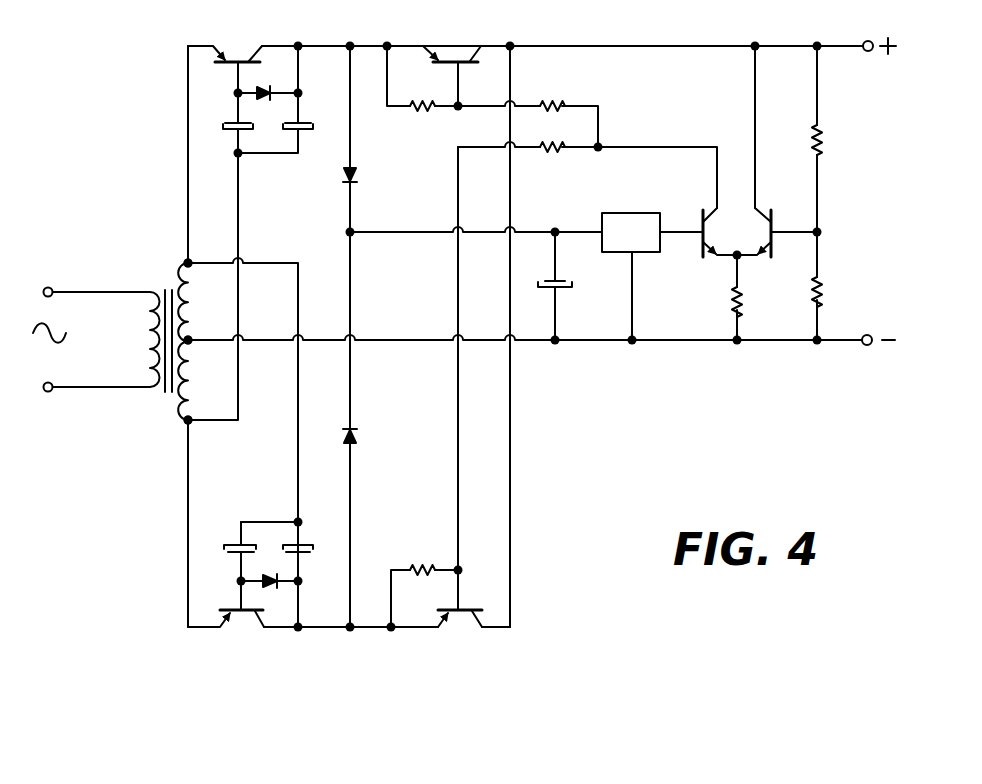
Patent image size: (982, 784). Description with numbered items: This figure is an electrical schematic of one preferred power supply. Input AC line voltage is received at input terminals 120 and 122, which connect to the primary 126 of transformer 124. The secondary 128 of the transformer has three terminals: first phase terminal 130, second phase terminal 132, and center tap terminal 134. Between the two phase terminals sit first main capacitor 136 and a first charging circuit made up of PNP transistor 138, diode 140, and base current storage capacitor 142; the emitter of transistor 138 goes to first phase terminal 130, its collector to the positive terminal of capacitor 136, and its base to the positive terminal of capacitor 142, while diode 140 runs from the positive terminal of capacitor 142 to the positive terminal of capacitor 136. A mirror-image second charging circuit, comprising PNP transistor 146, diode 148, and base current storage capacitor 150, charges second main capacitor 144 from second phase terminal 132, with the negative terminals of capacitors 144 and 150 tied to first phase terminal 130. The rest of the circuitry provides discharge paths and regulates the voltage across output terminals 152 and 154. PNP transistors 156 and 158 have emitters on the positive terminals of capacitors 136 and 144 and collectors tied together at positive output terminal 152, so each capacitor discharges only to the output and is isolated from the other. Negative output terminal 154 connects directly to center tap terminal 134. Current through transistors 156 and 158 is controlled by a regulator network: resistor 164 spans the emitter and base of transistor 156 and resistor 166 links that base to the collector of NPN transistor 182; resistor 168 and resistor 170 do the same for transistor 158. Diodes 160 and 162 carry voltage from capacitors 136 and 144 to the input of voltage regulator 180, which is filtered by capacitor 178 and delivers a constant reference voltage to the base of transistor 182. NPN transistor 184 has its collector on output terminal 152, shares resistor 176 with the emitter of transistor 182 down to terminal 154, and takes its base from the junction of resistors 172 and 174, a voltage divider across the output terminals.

The input terminal 120 is at (50, 286).
The input terminal 122 is at (50, 393).
The transformer 124 is at (164, 281).
The primary 126 is at (153, 390).
The secondary 128 is at (185, 416).
The first phase terminal 130 is at (190, 261).
The second phase terminal 132 is at (190, 424).
The center tap terminal 134 is at (190, 337).
The first main capacitor 136 is at (313, 129).
The PNP transistor 138 is at (252, 51).
The diode 140 is at (259, 88).
The base current storage capacitor 142 is at (226, 131).
The second main capacitor 144 is at (316, 547).
The PNP transistor 146 is at (258, 640).
The diode 148 is at (267, 586).
The base current storage capacitor 150 is at (224, 547).
The positive output terminal 152 is at (864, 41).
The negative output terminal 154 is at (864, 347).
The PNP transistor 156 is at (472, 49).
The PNP transistor 158 is at (473, 641).
The diode 160 is at (357, 175).
The diode 162 is at (356, 431).
The resistor 164 is at (424, 109).
The resistor 166 is at (546, 104).
The resistor 168 is at (421, 567).
The resistor 170 is at (547, 150).
The resistor 172 is at (822, 139).
The resistor 174 is at (823, 285).
The resistor 176 is at (733, 293).
The capacitor 178 is at (573, 284).
The voltage regulator 180 is at (629, 212).
The NPN transistor 182 is at (701, 241).
The NPN transistor 184 is at (773, 214).